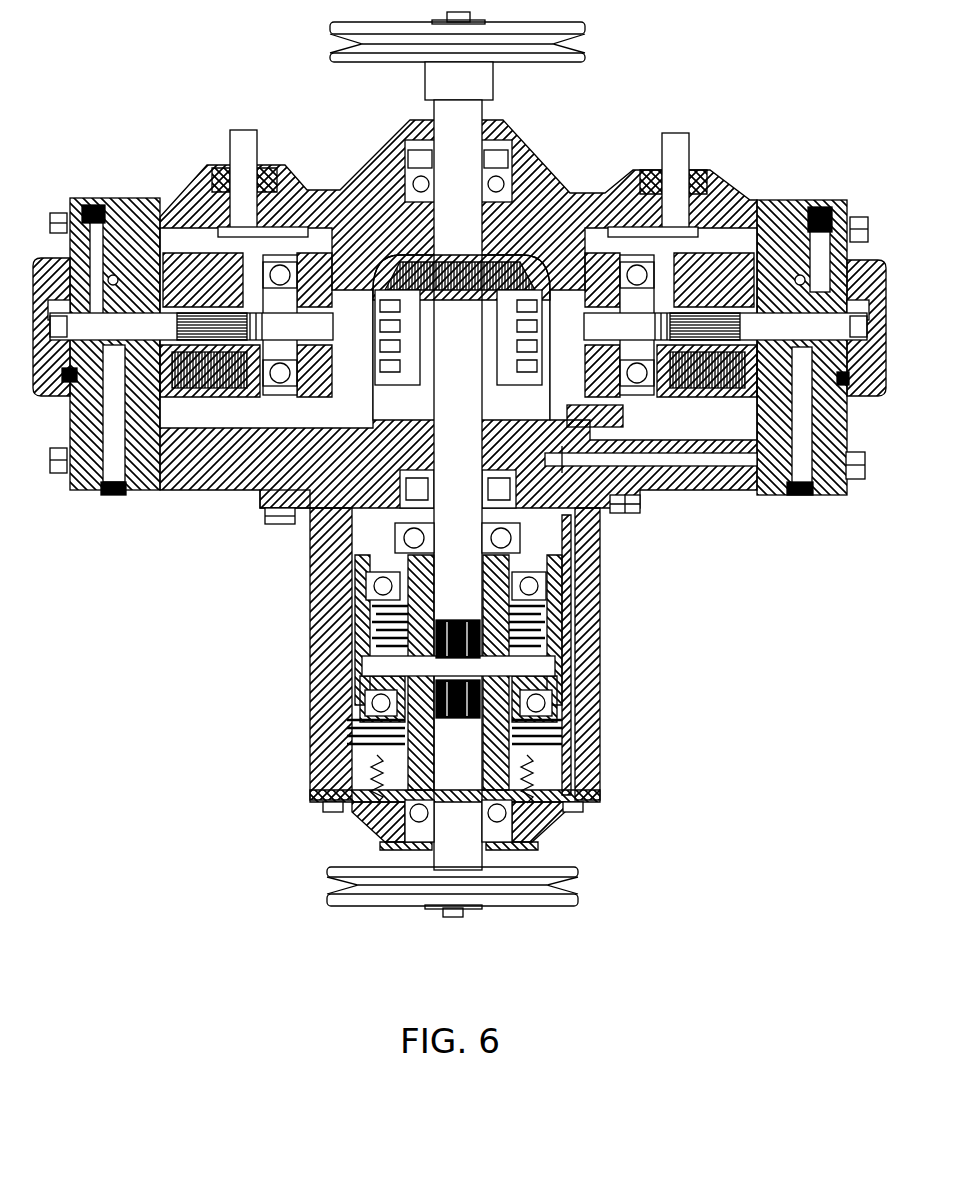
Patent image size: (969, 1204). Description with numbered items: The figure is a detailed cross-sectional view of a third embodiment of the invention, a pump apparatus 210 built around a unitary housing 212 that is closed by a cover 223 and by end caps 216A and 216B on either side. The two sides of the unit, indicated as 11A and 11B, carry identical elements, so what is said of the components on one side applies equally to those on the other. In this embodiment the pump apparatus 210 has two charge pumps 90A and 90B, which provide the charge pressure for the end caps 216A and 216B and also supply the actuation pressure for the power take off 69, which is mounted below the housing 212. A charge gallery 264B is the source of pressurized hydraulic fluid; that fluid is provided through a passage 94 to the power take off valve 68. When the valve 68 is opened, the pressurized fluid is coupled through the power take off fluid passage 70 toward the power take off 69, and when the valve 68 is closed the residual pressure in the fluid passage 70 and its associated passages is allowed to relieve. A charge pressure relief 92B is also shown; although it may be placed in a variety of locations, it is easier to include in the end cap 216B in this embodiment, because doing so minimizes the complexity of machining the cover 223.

The pump apparatus 210 is at (760, 62).
The first drive unit 11A is at (163, 150).
The second drive unit 11B is at (750, 156).
The housing 212 is at (388, 147).
The end cap 216A is at (127, 192).
The end cap 216B is at (790, 200).
The charge gallery 264B is at (800, 408).
The charge pump 90A is at (45, 398).
The charge pump 90B is at (872, 398).
The charge pressure relief 92B is at (837, 378).
The cover 223 is at (262, 497).
The power take off valve 68 is at (622, 512).
The passage 94 is at (672, 460).
The power take off fluid passage 70 is at (570, 593).
The power take off 69 is at (632, 668).